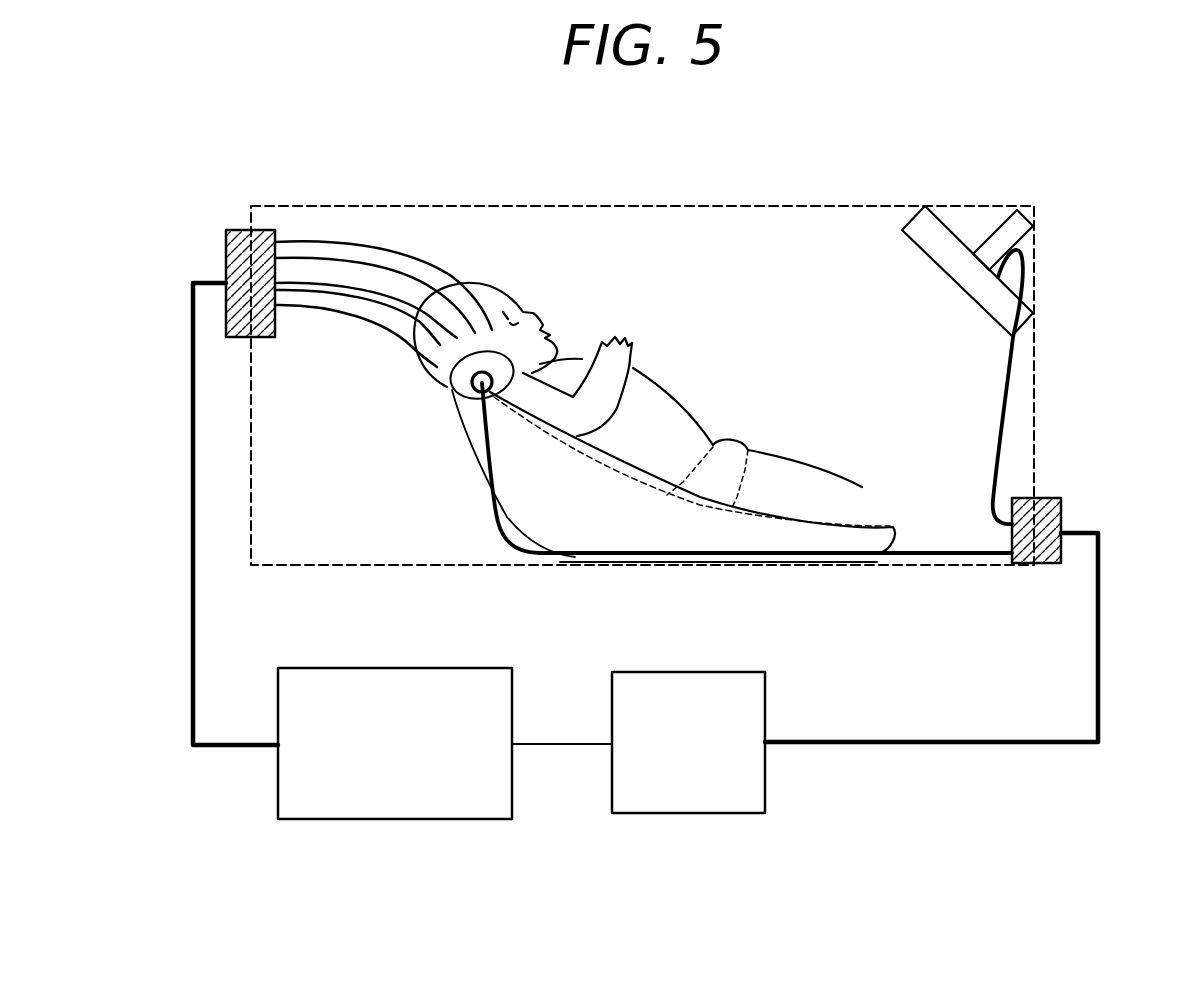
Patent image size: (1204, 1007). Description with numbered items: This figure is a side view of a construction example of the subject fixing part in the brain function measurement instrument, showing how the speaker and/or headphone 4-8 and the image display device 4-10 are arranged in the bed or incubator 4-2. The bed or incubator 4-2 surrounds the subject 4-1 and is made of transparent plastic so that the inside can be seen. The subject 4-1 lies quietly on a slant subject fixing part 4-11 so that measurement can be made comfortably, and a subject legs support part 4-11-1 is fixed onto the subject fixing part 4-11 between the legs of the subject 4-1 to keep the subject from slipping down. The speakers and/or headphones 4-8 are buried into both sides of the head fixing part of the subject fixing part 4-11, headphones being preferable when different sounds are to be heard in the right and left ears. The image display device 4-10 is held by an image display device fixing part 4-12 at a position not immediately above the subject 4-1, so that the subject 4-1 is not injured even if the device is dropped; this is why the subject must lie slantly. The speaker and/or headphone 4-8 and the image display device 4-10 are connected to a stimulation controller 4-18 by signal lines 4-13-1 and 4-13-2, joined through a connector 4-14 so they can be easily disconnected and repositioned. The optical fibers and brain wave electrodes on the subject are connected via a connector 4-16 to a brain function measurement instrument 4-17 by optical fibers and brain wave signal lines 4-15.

The subject 4-1 is at (673, 405).
The bed or incubator 4-2 is at (583, 205).
The speaker and/or headphone 4-8 is at (470, 390).
The image display device 4-10 is at (932, 245).
The slant subject fixing part 4-11 is at (477, 435).
The subject legs support part 4-11-1 is at (735, 440).
The image display device fixing part 4-12 is at (1022, 220).
The signal line 4-13-1 is at (877, 563).
The signal line 4-13-2 is at (1010, 372).
The connector 4-14 is at (1061, 510).
The optical fibers and brain wave signal lines 4-15 is at (342, 242).
The connector 4-16 is at (242, 227).
The brain function measurement instrument 4-17 is at (410, 813).
The stimulation controller 4-18 is at (680, 806).